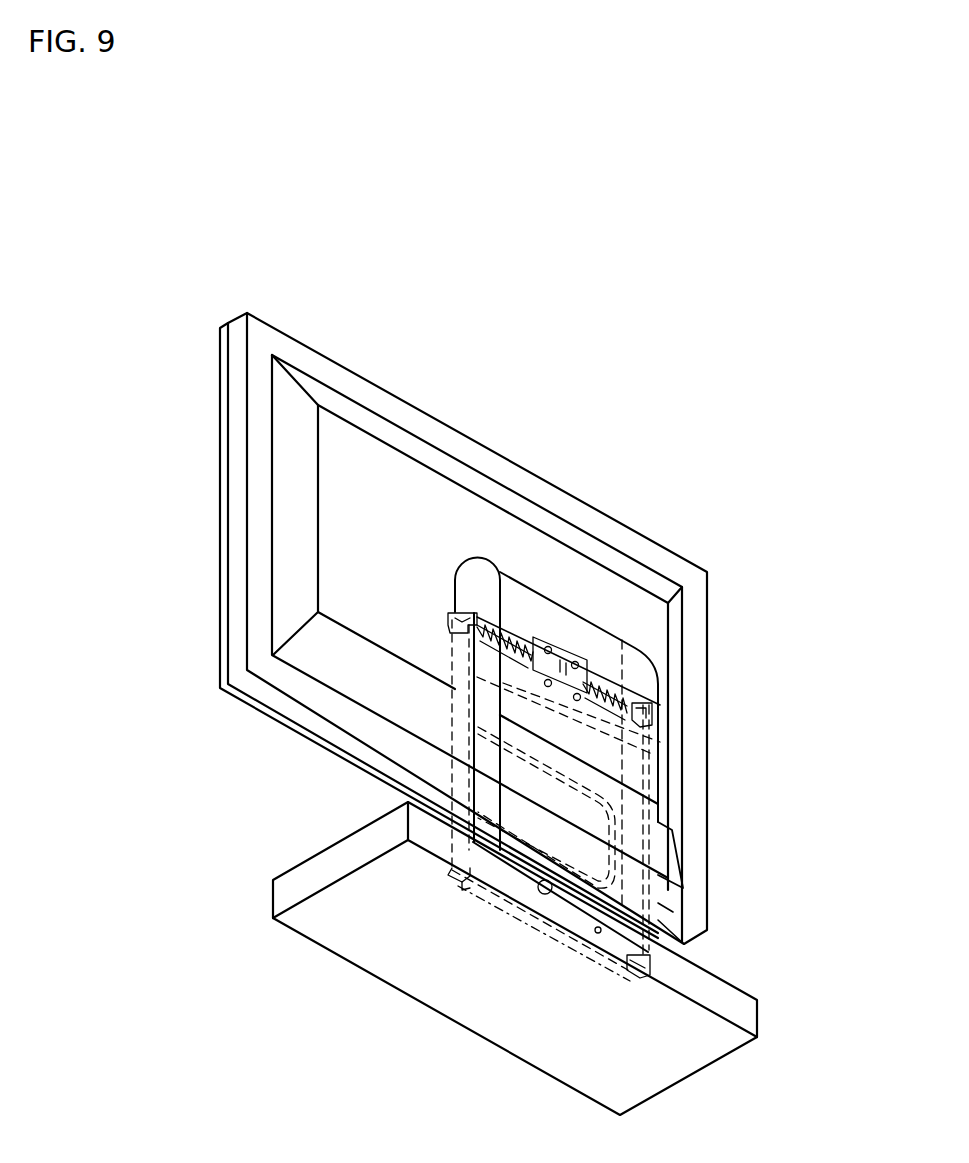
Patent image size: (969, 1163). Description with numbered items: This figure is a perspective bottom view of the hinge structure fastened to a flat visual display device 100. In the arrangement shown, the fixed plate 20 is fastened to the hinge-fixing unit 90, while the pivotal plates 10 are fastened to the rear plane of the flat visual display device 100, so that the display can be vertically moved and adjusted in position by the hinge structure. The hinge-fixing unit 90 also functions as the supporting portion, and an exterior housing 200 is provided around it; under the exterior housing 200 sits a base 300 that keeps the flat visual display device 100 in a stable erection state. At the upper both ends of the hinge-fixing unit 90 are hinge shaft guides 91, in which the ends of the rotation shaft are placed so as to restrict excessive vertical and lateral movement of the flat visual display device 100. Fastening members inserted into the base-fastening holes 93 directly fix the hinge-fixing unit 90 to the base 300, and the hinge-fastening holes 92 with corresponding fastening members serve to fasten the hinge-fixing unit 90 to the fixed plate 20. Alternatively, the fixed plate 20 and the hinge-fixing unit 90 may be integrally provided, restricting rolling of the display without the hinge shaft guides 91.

The pivotal plate 10 is at (650, 738).
The fixed plate 20 is at (527, 630).
The hinge-fixing unit 90 is at (687, 841).
The hinge shaft guide 91 is at (455, 628).
The hinge-fastening hole 92 is at (582, 662).
The base-fastening hole 93 is at (632, 976).
The flat visual display device 100 is at (399, 412).
The exterior housing 200 is at (658, 783).
The base 300 is at (745, 997).